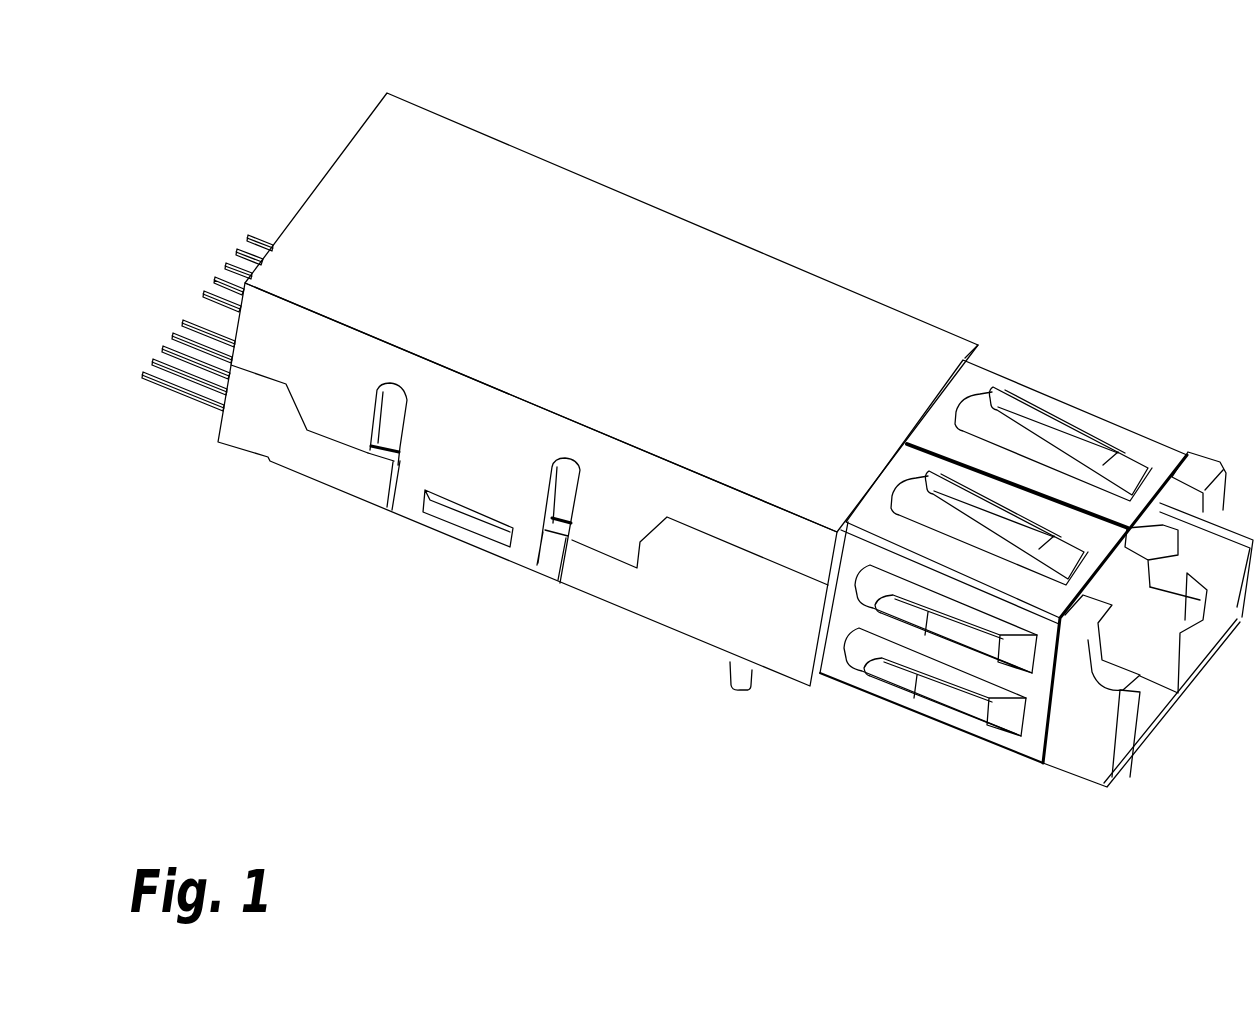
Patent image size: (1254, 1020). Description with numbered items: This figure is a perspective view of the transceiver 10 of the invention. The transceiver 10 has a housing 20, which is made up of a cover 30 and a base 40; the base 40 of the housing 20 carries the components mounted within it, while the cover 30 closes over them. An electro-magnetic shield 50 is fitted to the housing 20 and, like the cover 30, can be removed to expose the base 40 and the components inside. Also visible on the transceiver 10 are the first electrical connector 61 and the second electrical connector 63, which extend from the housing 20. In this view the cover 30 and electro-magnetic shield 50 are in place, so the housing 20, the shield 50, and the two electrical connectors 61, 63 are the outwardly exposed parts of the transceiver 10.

The transceiver 10 is at (1000, 198).
The housing 20 is at (400, 97).
The cover 30 is at (563, 167).
The base 40 is at (622, 612).
The electro-magnetic shield 50 is at (1087, 407).
The first electrical connector 61 is at (250, 230).
The second electrical connector 63 is at (142, 380).